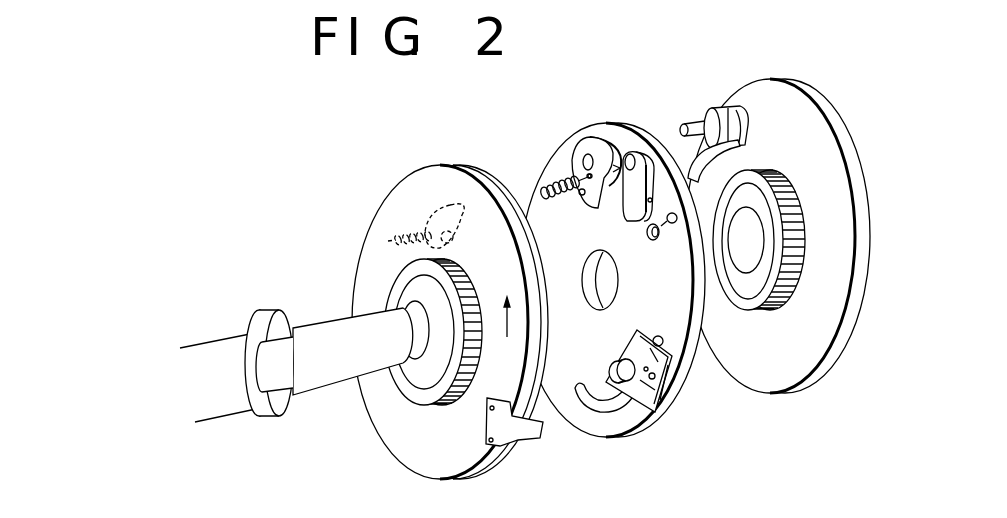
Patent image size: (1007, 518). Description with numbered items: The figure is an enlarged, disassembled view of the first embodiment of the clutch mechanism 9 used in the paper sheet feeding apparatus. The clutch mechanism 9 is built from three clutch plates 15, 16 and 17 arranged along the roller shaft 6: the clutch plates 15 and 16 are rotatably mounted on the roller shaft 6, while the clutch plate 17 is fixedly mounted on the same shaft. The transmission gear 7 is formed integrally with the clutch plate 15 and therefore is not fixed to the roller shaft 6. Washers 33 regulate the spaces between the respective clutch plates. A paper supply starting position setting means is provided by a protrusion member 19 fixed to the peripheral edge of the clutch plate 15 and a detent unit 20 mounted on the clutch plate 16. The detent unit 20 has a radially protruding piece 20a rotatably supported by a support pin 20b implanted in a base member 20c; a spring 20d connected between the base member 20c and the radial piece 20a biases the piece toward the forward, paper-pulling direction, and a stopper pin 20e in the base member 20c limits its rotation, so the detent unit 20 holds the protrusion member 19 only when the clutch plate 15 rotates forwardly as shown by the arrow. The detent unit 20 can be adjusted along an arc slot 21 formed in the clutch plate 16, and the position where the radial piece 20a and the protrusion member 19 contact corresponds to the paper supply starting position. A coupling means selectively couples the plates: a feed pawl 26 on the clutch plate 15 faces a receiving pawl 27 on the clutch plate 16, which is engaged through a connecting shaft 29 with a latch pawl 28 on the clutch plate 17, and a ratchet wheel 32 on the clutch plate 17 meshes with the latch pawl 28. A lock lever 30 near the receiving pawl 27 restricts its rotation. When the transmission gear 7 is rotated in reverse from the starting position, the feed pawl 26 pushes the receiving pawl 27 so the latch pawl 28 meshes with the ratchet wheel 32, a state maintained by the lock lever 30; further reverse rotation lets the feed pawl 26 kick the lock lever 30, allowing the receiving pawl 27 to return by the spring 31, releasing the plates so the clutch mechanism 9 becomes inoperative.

The roller shaft 6 is at (328, 330).
The transmission gear 7 is at (453, 397).
The clutch mechanism 9 is at (378, 197).
The clutch plate 15 is at (432, 187).
The clutch plate 16 is at (630, 122).
The clutch plate 17 is at (787, 80).
The protrusion member 19 is at (526, 440).
The detent unit 20 is at (680, 397).
The radially protruding piece 20a is at (650, 418).
The support pin 20b is at (624, 376).
The base member 20c is at (634, 344).
The spring 20d is at (660, 360).
The stopper pin 20e is at (672, 392).
The arc slot 21 is at (590, 412).
The feed pawl 26 is at (452, 206).
The receiving pawl 27 is at (590, 202).
The latch pawl 28 is at (690, 172).
The connecting shaft 29 is at (690, 122).
The lock lever 30 is at (628, 222).
The spring 31 is at (563, 184).
The ratchet wheel 32 is at (797, 196).
The washers 33 is at (262, 322).